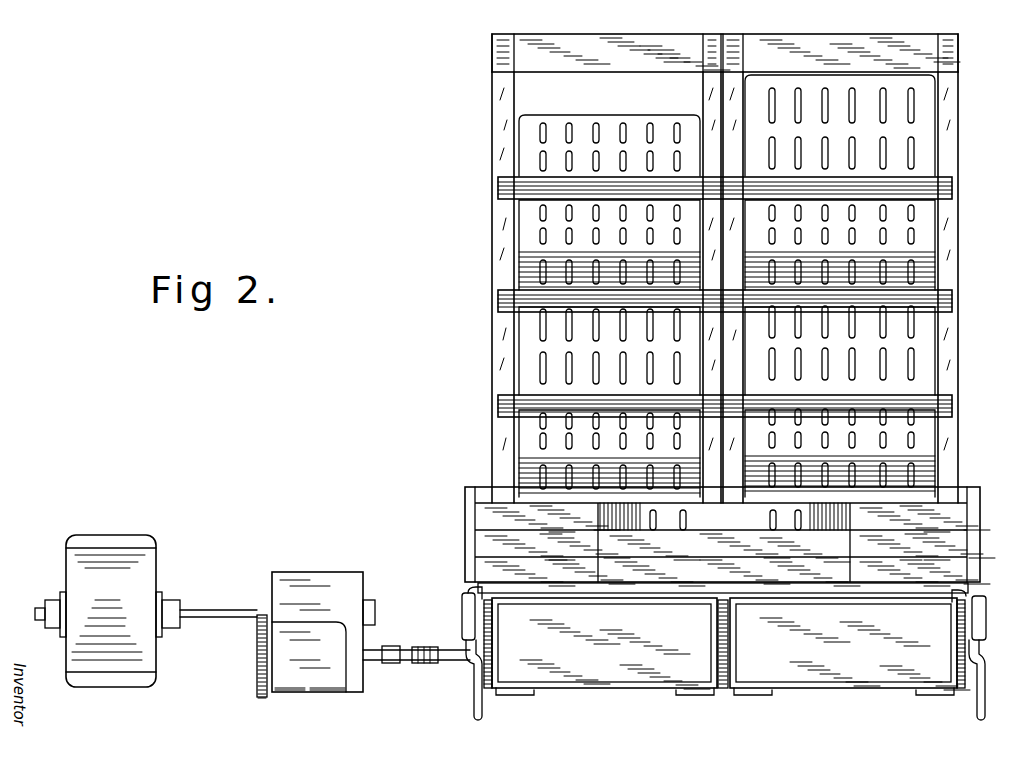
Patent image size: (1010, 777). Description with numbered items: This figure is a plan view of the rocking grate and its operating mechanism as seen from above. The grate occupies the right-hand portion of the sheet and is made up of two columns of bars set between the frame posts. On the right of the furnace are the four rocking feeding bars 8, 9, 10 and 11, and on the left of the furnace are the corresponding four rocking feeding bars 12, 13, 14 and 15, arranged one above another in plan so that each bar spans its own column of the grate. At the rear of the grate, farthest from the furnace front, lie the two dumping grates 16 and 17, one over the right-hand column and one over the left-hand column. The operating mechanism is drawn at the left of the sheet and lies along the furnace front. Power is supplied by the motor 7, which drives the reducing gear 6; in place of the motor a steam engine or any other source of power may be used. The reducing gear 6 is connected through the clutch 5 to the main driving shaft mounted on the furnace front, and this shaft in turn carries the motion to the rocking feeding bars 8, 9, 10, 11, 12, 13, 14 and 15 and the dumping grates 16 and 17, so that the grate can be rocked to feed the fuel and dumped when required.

The clutch 5 is at (412, 650).
The reducing gear 6 is at (318, 574).
The motor 7 is at (85, 572).
The rocking feeding bar 8 is at (777, 522).
The rocking feeding bar 9 is at (920, 425).
The rocking feeding bar 10 is at (922, 343).
The rocking feeding bar 11 is at (918, 235).
The rocking feeding bar 12 is at (665, 522).
The rocking feeding bar 13 is at (530, 437).
The rocking feeding bar 14 is at (533, 350).
The rocking feeding bar 15 is at (530, 247).
The dumping grate 16 is at (927, 110).
The dumping grate 17 is at (530, 153).